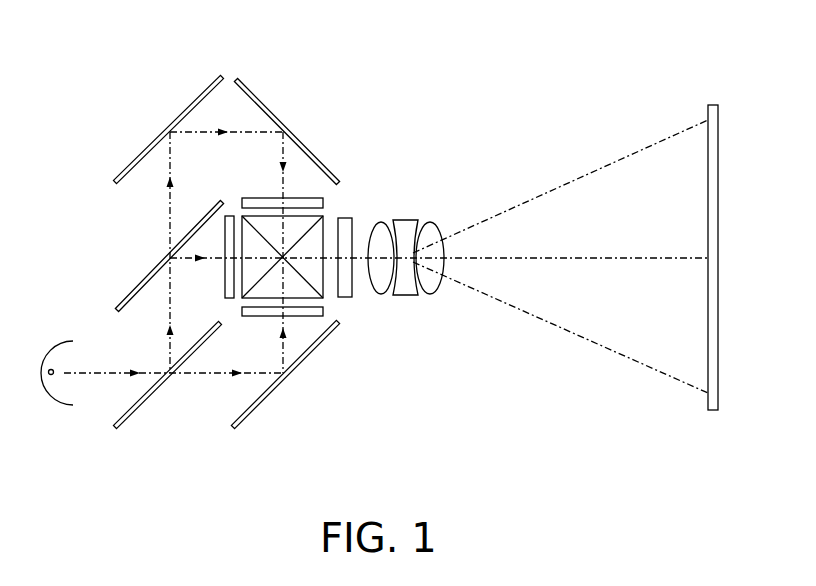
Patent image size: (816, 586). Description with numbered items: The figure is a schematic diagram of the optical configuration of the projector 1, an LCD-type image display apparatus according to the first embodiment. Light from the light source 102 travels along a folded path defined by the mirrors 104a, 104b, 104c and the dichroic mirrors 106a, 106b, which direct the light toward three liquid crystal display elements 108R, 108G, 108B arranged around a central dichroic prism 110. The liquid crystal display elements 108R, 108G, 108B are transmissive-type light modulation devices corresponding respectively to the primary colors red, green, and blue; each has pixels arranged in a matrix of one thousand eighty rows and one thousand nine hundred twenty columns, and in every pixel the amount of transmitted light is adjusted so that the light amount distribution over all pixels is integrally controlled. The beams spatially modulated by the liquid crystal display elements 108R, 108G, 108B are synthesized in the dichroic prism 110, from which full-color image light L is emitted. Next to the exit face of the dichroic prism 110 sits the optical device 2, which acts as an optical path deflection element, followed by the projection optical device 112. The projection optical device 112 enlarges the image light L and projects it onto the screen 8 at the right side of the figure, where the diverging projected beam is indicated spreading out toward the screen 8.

The projector 1 is at (406, 77).
The optical device 2 is at (352, 282).
The screen 8 is at (713, 411).
The light source 102 is at (50, 399).
The mirror 104a is at (260, 410).
The mirror 104b is at (187, 102).
The mirror 104c is at (272, 100).
The dichroic mirror 106a is at (143, 412).
The dichroic mirror 106b is at (133, 282).
The liquid crystal display element 108R is at (265, 316).
The liquid crystal display element 108G is at (224, 268).
The liquid crystal display element 108B is at (325, 203).
The dichroic prism 110 is at (339, 218).
The projection optical device 112 is at (445, 298).
The image light L is at (335, 298).